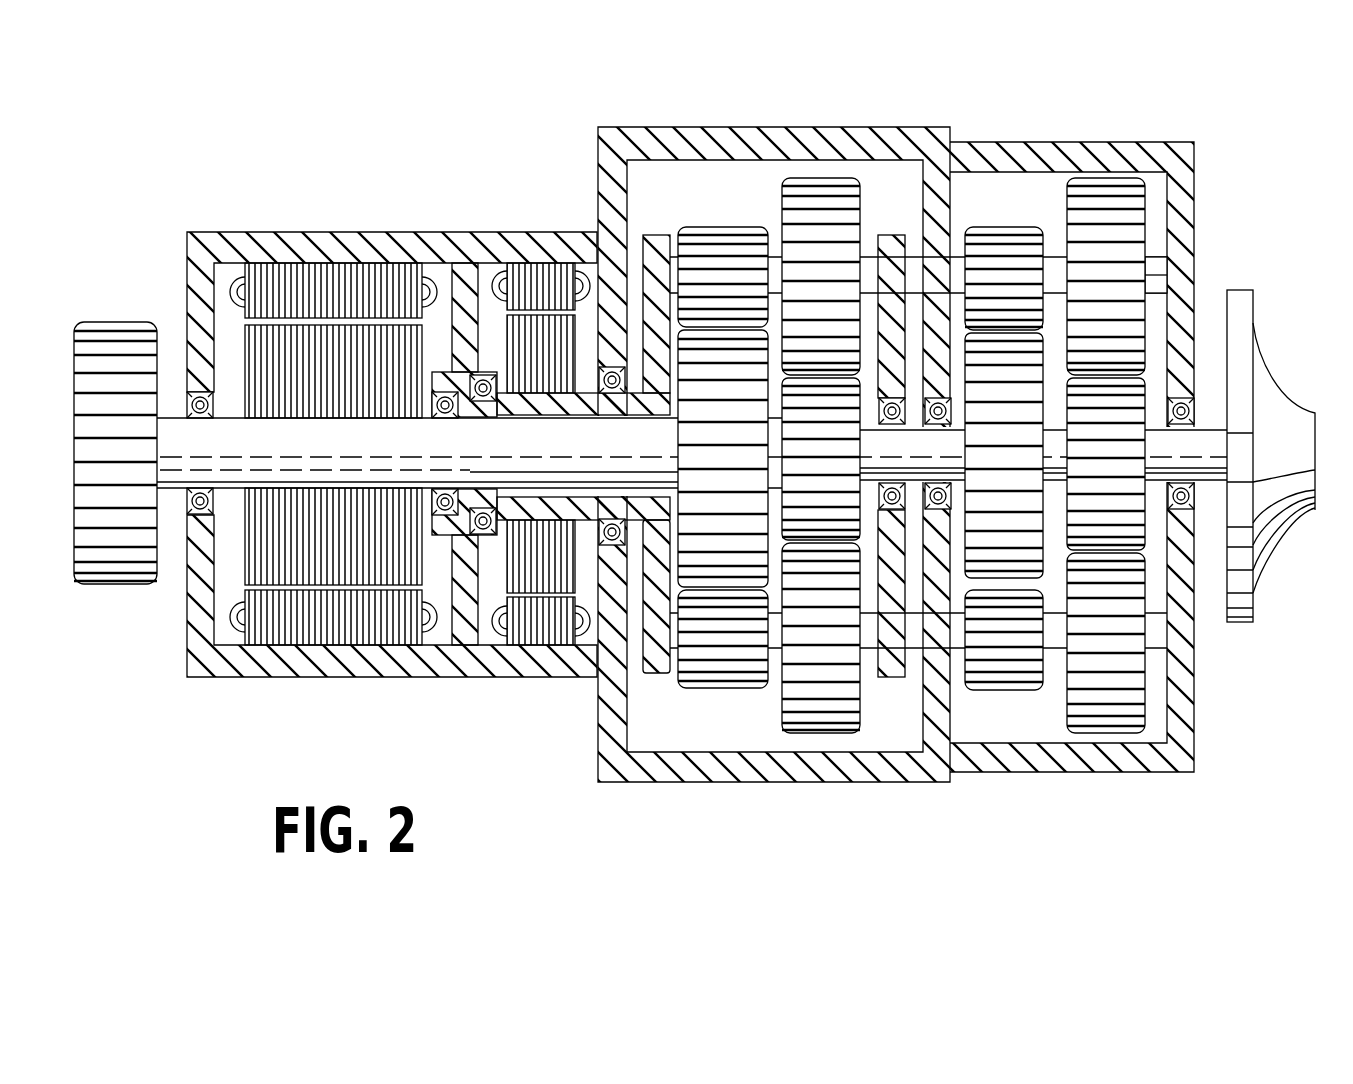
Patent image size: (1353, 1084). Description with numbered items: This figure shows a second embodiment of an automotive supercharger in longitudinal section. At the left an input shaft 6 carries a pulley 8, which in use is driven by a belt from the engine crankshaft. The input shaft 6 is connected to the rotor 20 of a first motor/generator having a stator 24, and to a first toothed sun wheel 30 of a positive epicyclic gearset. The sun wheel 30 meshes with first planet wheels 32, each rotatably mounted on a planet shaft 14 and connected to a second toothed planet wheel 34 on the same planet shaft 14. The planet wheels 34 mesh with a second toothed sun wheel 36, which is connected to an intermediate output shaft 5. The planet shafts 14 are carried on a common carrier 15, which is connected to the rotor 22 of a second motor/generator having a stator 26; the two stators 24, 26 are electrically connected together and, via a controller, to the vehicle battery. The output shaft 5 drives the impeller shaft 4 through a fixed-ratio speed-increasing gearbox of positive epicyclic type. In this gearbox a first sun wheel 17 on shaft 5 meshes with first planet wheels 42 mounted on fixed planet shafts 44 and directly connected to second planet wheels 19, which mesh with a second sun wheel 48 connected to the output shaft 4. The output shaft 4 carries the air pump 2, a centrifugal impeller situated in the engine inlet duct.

The air pump 2 is at (1277, 535).
The output shaft 4 is at (1207, 490).
The intermediate output shaft 5 is at (923, 443).
The input shaft 6 is at (185, 488).
The pulley 8 is at (120, 585).
The planet shaft 14 is at (867, 277).
The carrier 15 is at (648, 675).
The first sun wheel 17 is at (992, 380).
The second planet wheel 19 is at (1093, 257).
The rotor 20 is at (337, 540).
The rotor 22 is at (527, 547).
The stator 24 is at (345, 630).
The stator 26 is at (540, 623).
The first toothed sun wheel 30 is at (713, 457).
The first planet wheel 32 is at (730, 632).
The second toothed planet wheel 34 is at (830, 632).
The second toothed sun wheel 36 is at (830, 455).
The first planet wheel 42 is at (990, 650).
The fixed planet shaft 44 is at (1162, 262).
The second sun wheel 48 is at (1107, 417).